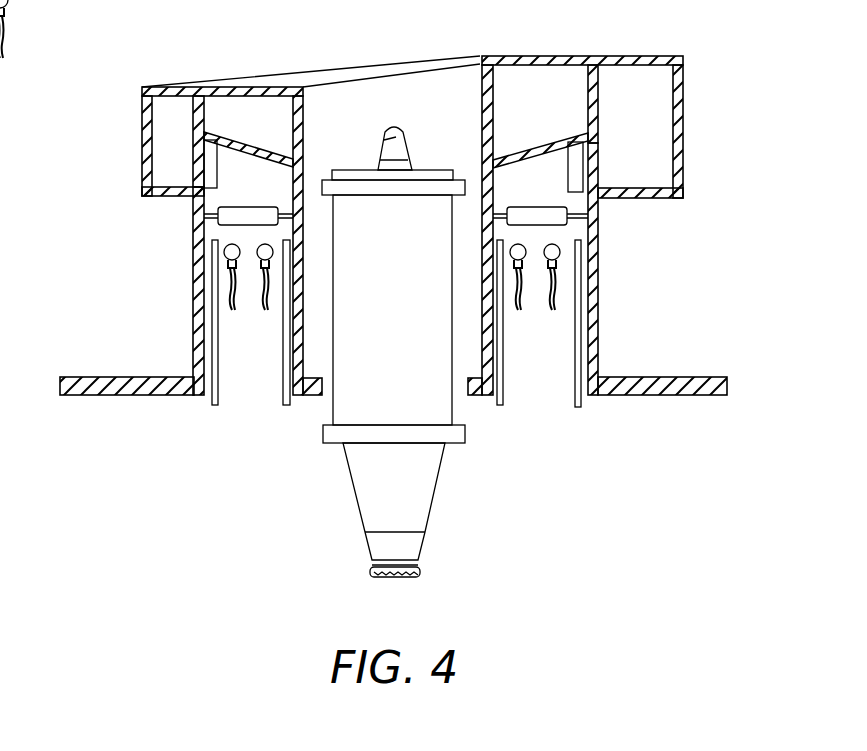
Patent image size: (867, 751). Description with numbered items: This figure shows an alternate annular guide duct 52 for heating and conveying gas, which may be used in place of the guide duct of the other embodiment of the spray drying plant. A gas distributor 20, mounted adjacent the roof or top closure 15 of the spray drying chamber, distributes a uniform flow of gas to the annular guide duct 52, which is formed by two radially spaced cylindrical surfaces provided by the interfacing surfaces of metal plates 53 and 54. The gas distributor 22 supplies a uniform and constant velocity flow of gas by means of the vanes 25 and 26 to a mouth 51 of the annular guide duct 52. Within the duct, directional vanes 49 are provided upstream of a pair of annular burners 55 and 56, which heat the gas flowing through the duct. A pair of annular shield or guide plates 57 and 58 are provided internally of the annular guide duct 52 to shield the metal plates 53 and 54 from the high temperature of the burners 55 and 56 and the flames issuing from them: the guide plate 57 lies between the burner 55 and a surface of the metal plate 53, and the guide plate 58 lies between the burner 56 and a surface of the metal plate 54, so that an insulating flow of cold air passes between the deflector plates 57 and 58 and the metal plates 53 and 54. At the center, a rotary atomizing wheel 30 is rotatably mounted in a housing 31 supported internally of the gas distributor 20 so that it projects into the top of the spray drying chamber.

The gas distributor 20 is at (386, 52).
The gas distributor 22 is at (683, 120).
The vane 25 is at (190, 178).
The vane 26 is at (198, 200).
The directional vanes 49 is at (200, 238).
The mouth 51 is at (258, 194).
The annular guide duct 52 is at (174, 287).
The metal plate 53 is at (300, 353).
The metal plate 54 is at (194, 340).
The annular burner 55 is at (136, 169).
The annular burner 56 is at (535, 290).
The guide plate 57 is at (284, 384).
The guide plate 58 is at (576, 393).
The top closure 15 is at (103, 377).
The rotary atomizing wheel 30 is at (420, 572).
The housing 31 is at (412, 484).